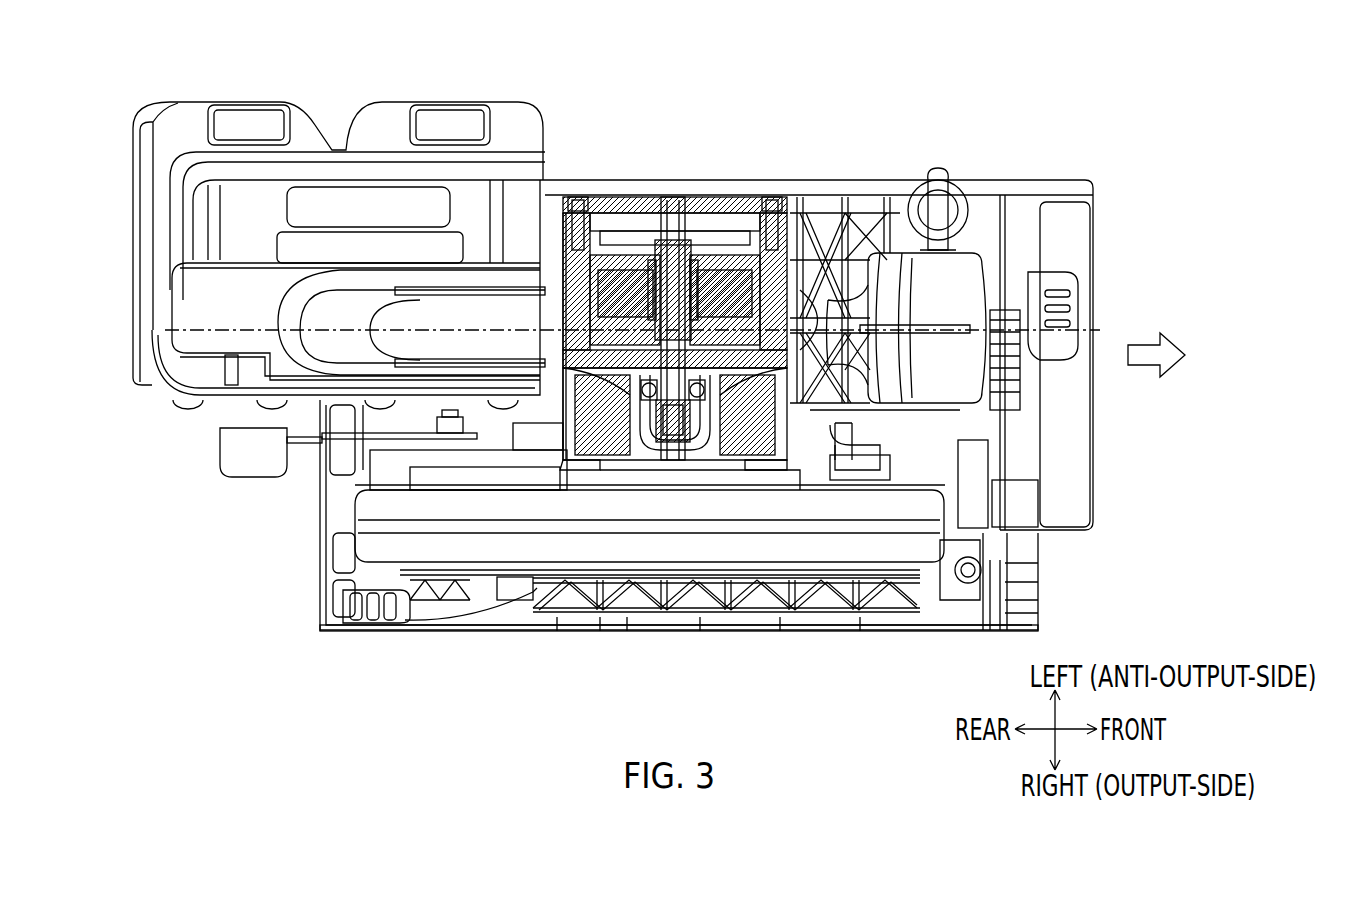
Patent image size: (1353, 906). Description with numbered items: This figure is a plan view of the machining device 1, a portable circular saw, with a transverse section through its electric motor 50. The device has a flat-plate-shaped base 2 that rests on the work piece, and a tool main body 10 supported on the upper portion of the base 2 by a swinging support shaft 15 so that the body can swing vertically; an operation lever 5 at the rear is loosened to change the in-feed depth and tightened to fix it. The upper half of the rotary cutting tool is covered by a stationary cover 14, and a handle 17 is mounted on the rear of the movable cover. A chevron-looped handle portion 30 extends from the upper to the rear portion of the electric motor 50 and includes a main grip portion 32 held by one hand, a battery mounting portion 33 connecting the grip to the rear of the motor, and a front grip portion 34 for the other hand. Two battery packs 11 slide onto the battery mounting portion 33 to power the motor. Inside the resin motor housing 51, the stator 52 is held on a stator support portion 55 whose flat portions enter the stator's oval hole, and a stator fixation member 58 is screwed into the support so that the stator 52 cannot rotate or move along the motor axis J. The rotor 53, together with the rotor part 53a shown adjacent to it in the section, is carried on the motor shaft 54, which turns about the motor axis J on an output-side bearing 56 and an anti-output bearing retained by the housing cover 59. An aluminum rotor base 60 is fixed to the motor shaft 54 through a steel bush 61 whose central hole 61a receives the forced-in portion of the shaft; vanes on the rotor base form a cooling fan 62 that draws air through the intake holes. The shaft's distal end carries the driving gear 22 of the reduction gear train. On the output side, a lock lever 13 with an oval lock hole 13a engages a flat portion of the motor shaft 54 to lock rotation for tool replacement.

The machining device 1 is at (1028, 110).
The base 2 is at (840, 632).
The operation lever 5 is at (230, 457).
The tool main body 10 is at (997, 266).
The battery packs 11 is at (205, 128).
The lock lever 13 is at (738, 440).
The lock hole 13a is at (690, 455).
The stationary cover 14 is at (790, 545).
The swinging support shaft 15 is at (955, 578).
The handle 17 is at (420, 612).
The driving gear 22 is at (655, 455).
The handle portion 30 is at (441, 326).
The main grip portion 32 is at (487, 318).
The battery mounting portion 33 is at (397, 208).
The front grip portion 34 is at (950, 370).
The electric motor 50 is at (733, 200).
The motor housing 51 is at (532, 300).
The stator 52 is at (610, 205).
The rotor 53 is at (808, 215).
The magnet 53a is at (760, 210).
The motor shaft 54 is at (610, 440).
The stator support portion 55 is at (692, 225).
The bearing 56 is at (718, 450).
The stator fixation member 58 is at (715, 215).
The housing cover 59 is at (628, 225).
The rotor base 60 is at (770, 455).
The bush 61 is at (605, 460).
The central hole 61a is at (668, 455).
The cooling fan 62 is at (560, 450).
The motor axis J is at (673, 470).